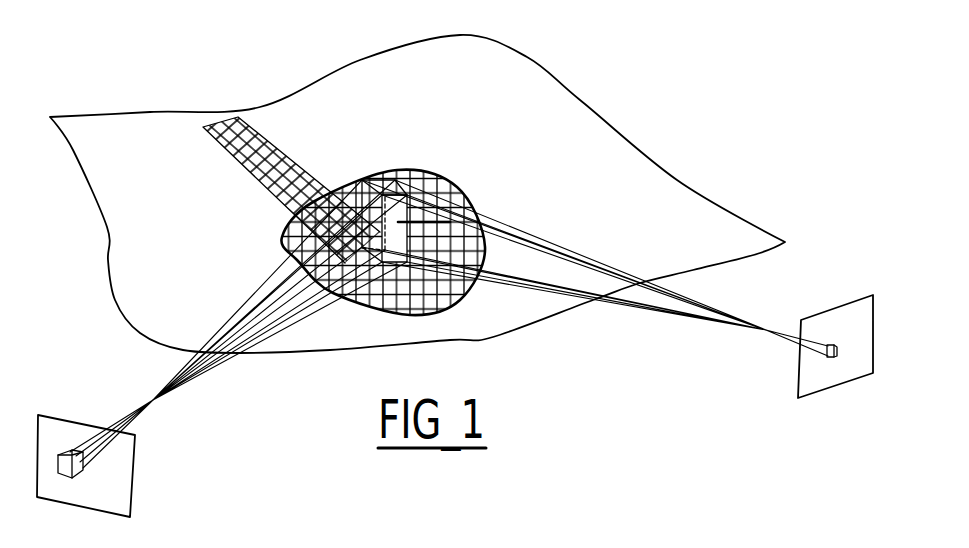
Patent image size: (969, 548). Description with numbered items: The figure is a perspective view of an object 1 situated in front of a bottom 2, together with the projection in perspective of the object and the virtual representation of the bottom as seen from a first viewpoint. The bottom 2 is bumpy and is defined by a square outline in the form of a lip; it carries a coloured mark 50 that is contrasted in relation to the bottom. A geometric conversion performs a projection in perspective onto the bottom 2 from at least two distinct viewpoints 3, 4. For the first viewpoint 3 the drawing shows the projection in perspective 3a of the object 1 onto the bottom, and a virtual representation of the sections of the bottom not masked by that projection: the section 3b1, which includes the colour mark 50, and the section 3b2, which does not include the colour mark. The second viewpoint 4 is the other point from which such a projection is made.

The object 1 is at (487, 204).
The bottom 2 is at (520, 67).
The first viewpoint 3 is at (769, 323).
The projection in perspective 3a is at (261, 147).
The virtual representation of the bottom section including the colour mark 3b1 is at (287, 233).
The virtual representation of the bottom section without the colour mark 3b2 is at (167, 143).
The second viewpoint 4 is at (146, 395).
The coloured mark 50 is at (467, 300).